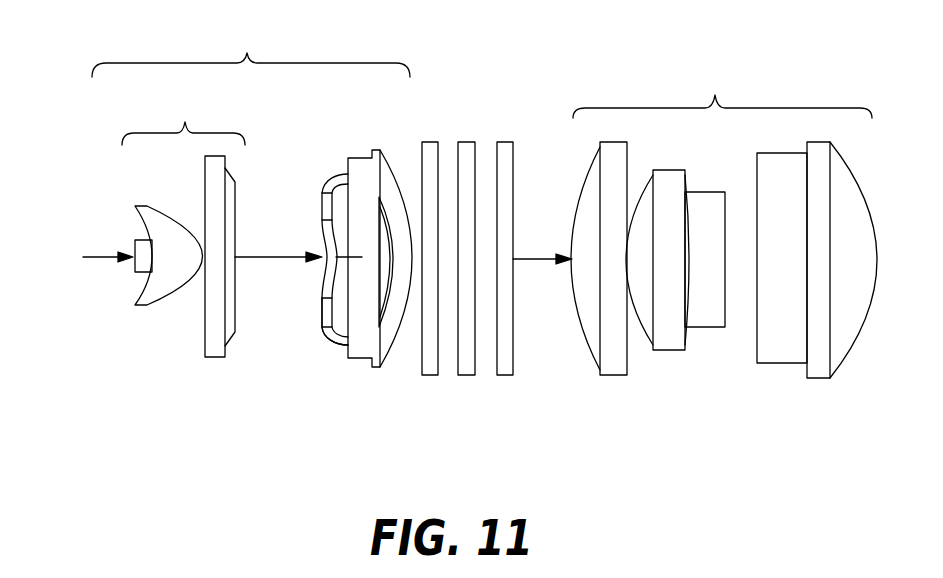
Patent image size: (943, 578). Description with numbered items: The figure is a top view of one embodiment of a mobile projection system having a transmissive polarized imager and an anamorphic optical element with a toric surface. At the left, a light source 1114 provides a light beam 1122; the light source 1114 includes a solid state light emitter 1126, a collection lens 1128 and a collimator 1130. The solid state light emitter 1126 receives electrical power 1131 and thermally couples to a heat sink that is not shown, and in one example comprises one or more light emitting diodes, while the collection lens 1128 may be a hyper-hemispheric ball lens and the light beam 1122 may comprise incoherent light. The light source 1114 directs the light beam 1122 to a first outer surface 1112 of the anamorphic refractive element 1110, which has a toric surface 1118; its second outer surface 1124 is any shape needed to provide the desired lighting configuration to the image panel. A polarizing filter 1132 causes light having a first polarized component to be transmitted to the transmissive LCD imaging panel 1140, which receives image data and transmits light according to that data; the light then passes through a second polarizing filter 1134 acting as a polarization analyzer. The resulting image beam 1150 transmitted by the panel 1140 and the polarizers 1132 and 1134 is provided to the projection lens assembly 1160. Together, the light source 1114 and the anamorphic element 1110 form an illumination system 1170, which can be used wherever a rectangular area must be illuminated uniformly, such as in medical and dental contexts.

The anamorphic optical element 1110 is at (347, 162).
The first outer surface 1112 is at (334, 178).
The light source 1114 is at (183, 119).
The toric surface 1118 is at (322, 283).
The light beam 1122 is at (271, 255).
The second outer surface 1124 is at (392, 360).
The solid state light emitter 1126 is at (133, 262).
The collection lens 1128 is at (147, 306).
The collimator 1130 is at (212, 358).
The electrical power 1131 is at (100, 254).
The polarizing filter 1132 is at (430, 378).
The second polarizing filter 1134 is at (504, 378).
The transmissive LCD imaging panel 1140 is at (466, 378).
The image beam 1150 is at (533, 262).
The projection lens assembly 1160 is at (722, 90).
The illumination system 1170 is at (251, 51).